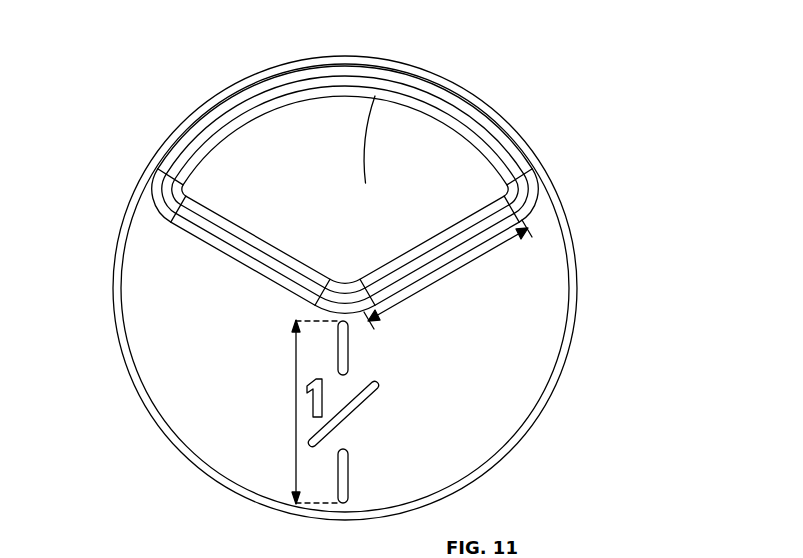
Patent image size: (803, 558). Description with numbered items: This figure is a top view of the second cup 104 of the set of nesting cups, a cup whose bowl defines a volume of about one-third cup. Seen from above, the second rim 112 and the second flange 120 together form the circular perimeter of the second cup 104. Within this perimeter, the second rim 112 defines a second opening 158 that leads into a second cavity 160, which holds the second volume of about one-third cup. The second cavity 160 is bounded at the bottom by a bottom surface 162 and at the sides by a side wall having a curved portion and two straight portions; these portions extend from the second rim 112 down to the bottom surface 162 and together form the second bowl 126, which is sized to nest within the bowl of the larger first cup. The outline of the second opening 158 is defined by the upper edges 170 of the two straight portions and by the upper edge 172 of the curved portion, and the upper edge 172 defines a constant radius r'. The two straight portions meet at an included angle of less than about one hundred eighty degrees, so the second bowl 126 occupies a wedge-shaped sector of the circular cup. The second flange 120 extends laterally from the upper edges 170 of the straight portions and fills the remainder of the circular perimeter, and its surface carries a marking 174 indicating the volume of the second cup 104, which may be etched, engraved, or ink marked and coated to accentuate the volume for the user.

The second cup 104 is at (609, 37).
The second rim 112 is at (556, 393).
The second flange 120 is at (162, 383).
The second bowl 126 is at (373, 117).
The second opening 158 is at (197, 155).
The second cavity 160 is at (463, 170).
The bottom surface 162 is at (237, 148).
The upper edges of the two second straight portions 170 is at (492, 180).
The upper edge of the second curved portion 172 is at (264, 113).
The marking 174 is at (296, 402).